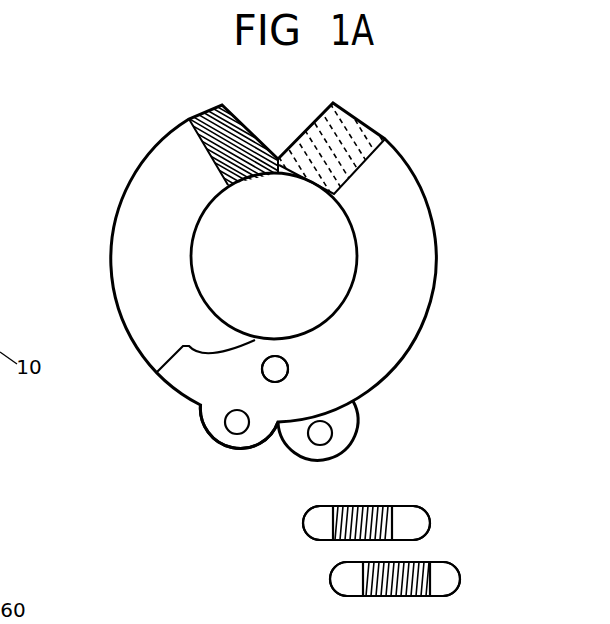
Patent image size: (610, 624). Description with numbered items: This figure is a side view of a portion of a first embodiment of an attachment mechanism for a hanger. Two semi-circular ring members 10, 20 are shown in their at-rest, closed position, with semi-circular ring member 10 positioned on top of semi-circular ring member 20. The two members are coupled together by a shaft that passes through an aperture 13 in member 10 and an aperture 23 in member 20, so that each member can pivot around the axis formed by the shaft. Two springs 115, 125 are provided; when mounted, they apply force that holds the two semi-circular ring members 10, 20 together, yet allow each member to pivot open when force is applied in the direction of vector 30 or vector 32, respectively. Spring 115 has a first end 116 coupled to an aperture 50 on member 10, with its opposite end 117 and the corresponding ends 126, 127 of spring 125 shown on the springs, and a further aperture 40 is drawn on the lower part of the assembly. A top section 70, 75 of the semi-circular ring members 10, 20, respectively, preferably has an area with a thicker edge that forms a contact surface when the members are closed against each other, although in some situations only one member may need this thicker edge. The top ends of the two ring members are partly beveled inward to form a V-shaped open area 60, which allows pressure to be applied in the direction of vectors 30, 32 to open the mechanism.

The semi-circular ring member 10 is at (395, 235).
The semi-circular ring member 20 is at (143, 234).
The aperture 13 is at (290, 368).
The aperture 23 is at (273, 356).
The vector 30 is at (481, 166).
The vector 32 is at (64, 158).
The mounting lobe hole 40 is at (318, 440).
The aperture 50 is at (235, 430).
The V-shaped open area 60 is at (277, 122).
The top section 70 is at (213, 133).
The top section 75 is at (335, 147).
The spring 115 is at (362, 502).
The first end 116 is at (302, 532).
The spring second end 117 is at (427, 510).
The spring 125 is at (398, 597).
The second spring first end 126 is at (330, 583).
The second spring second end 127 is at (460, 577).